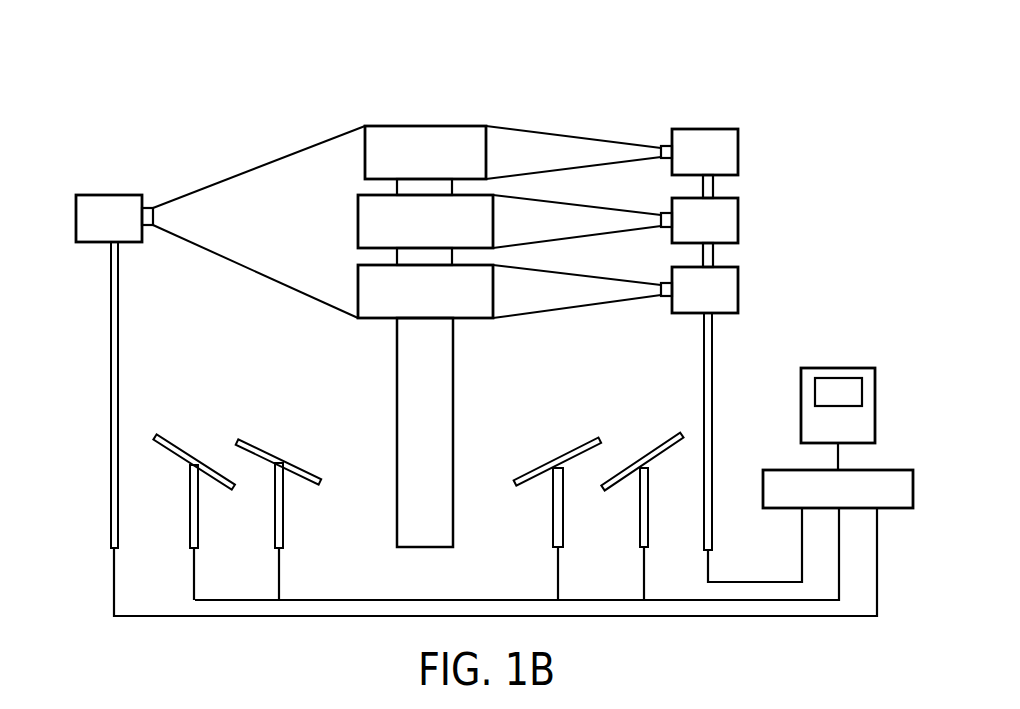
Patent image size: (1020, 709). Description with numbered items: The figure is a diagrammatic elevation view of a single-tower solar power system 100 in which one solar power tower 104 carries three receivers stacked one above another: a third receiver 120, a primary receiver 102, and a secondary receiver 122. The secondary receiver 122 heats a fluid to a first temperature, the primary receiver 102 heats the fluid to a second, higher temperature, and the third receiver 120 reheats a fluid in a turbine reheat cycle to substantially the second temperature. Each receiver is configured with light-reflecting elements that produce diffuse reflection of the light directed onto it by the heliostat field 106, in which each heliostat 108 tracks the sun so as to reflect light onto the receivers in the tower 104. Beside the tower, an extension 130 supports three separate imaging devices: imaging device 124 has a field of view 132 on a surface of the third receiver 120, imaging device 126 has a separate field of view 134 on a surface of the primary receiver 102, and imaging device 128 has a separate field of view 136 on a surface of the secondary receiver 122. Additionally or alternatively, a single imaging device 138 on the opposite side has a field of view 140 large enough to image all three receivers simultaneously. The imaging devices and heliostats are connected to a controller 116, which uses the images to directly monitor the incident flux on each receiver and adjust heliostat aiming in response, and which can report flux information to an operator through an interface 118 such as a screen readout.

The single-tower system 100 is at (121, 95).
The single imaging device 138 is at (454, 368).
The field of view 140 is at (312, 227).
The secondary receiver 122 is at (445, 165).
The primary receiver 102 is at (445, 233).
The third receiver 120 is at (445, 305).
The solar power tower 104 is at (390, 450).
The field of view 136 is at (548, 165).
The field of view 134 is at (548, 233).
The field of view 132 is at (548, 305).
The imaging device 128 is at (717, 125).
The imaging device 126 is at (725, 196).
The imaging device 124 is at (728, 250).
The extension 130 is at (753, 432).
The interface 118 is at (852, 381).
The controller 116 is at (888, 500).
The heliostat field 106 is at (418, 457).
The heliostat 108 is at (160, 518).